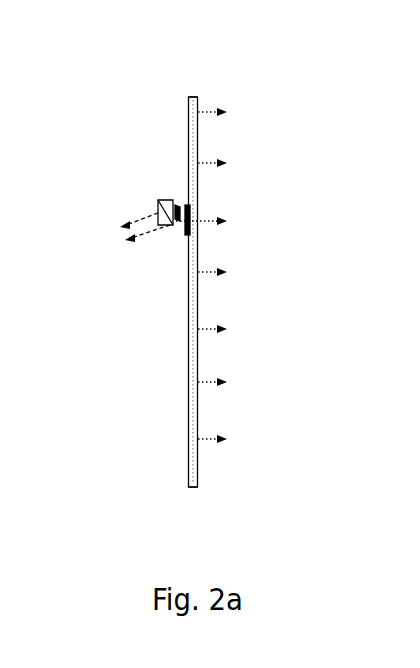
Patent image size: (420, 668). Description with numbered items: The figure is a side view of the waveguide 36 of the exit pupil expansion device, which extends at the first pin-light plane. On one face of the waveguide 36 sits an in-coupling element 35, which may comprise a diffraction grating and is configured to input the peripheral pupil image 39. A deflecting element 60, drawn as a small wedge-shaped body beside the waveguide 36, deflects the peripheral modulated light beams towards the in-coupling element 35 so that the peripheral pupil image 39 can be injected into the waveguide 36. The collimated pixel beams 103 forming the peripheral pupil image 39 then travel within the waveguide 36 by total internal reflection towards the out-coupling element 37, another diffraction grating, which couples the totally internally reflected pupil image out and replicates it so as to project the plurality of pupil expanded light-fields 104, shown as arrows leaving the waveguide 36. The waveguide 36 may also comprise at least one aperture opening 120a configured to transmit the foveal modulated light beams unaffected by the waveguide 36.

The aperture opening 120a is at (202, 291).
The waveguide 36 is at (194, 97).
The out-coupling element 37 is at (188, 412).
The pupil expanded light-fields 104 is at (241, 270).
The deflecting element 60 is at (158, 200).
The in-coupling element 35 is at (180, 204).
The peripheral pupil image 39 is at (184, 236).
The collimated pixel beams 103 is at (105, 246).